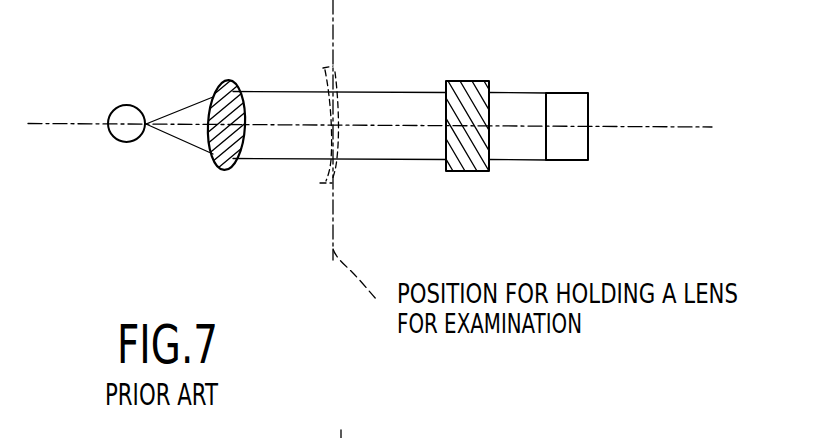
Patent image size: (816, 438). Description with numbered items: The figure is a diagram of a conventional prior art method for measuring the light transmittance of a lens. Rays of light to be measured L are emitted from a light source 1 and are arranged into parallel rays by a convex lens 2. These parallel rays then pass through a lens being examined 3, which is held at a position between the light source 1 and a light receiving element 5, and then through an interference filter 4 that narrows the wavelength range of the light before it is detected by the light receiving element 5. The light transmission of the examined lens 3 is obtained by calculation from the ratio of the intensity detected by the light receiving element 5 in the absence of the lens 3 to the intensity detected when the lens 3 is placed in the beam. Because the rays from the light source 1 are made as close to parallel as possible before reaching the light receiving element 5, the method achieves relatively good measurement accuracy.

The light source 1 is at (112, 111).
The rays of light to be measured L is at (183, 101).
The convex lens 2 is at (232, 81).
The lens being examined 3 is at (324, 185).
The interference filter 4 is at (465, 80).
The light receiving element 5 is at (588, 107).